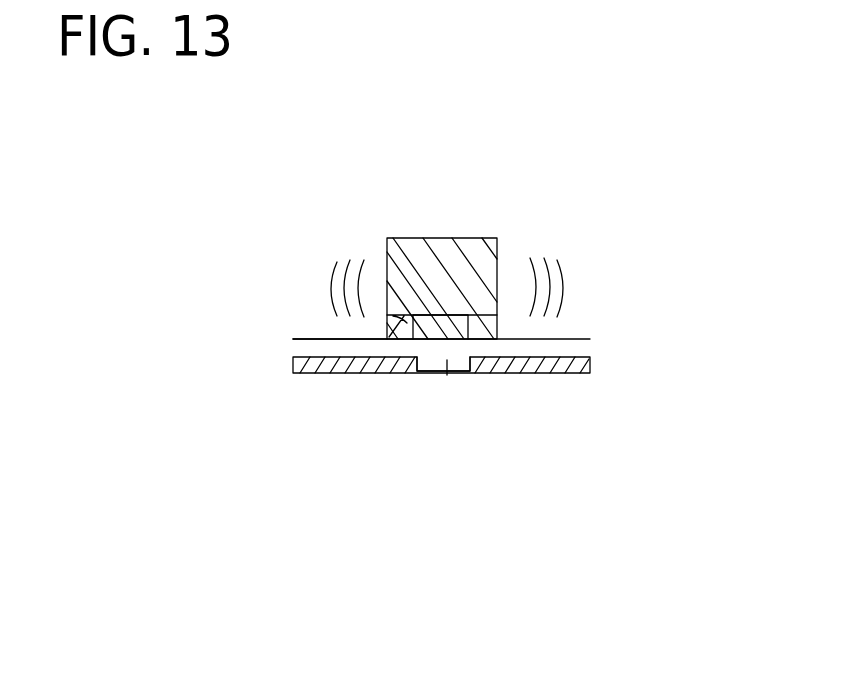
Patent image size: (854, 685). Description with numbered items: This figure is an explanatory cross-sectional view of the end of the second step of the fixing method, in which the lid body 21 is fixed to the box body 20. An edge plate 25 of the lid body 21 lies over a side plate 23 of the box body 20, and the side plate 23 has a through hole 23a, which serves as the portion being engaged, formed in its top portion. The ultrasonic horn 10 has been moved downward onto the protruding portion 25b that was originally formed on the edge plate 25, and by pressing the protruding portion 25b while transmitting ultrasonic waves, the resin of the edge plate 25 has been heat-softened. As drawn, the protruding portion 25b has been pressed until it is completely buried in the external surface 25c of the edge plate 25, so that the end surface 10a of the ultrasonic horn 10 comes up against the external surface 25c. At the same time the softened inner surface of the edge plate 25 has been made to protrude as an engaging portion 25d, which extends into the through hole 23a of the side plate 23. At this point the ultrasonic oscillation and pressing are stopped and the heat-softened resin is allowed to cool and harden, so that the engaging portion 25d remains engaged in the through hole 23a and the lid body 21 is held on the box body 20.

The ultrasonic horn 10 is at (482, 253).
The end surface 10a is at (383, 328).
The protruding portion 25b is at (450, 318).
The edge plate 25 is at (521, 348).
The lid body 21 is at (573, 348).
The external surface 25c is at (323, 339).
The engaging portion 25d is at (447, 362).
The side plate 23 is at (521, 388).
The box body 20 is at (590, 370).
The through hole 23a is at (420, 363).